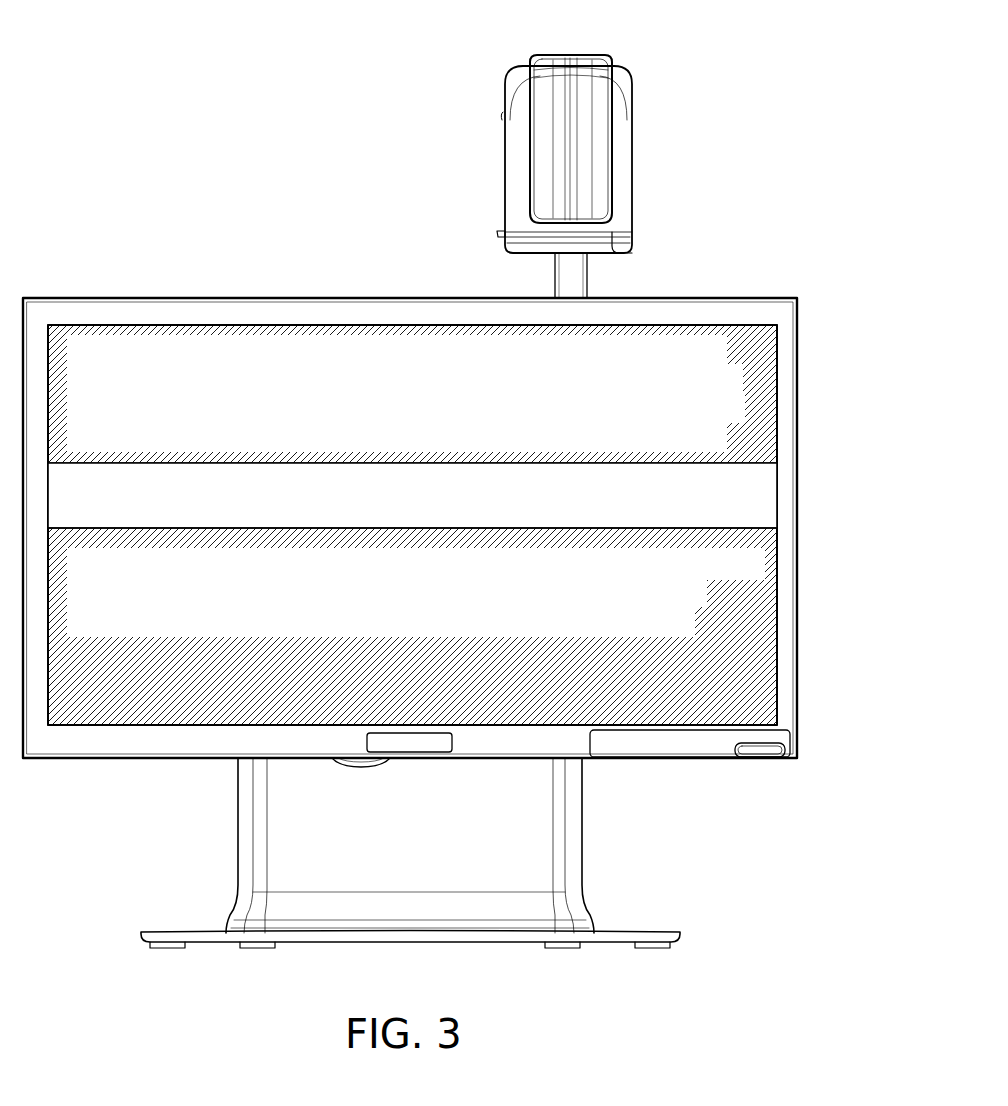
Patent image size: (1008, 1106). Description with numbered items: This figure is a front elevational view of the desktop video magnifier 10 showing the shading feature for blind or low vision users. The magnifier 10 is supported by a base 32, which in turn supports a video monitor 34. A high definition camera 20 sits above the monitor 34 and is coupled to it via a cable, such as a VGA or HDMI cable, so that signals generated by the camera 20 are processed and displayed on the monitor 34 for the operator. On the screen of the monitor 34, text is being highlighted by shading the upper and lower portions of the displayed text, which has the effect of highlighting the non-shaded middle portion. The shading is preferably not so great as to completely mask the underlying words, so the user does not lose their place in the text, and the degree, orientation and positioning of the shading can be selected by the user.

The desktop video magnifier 10 is at (185, 176).
The high definition camera 20 is at (625, 147).
The base 32 is at (570, 848).
The video monitor 34 is at (787, 663).